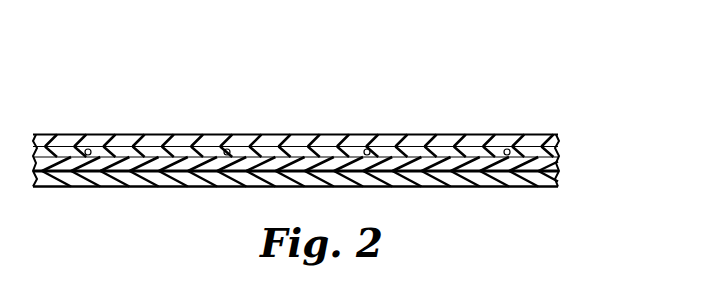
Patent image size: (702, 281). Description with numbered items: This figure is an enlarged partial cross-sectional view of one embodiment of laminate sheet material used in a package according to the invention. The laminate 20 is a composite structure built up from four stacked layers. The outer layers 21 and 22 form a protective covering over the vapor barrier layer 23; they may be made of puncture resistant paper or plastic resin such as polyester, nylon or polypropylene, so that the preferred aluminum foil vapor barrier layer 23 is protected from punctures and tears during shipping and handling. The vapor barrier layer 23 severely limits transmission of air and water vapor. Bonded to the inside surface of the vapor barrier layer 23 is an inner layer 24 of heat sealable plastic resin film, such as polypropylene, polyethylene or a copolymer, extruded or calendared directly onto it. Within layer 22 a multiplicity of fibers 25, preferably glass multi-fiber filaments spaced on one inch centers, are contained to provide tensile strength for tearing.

The laminate 20 is at (485, 112).
The layer 21 is at (328, 135).
The layer 22 is at (562, 151).
The vapor barrier layer 23 is at (548, 163).
The inner layer 24 is at (497, 188).
The fibers 25 is at (91, 151).